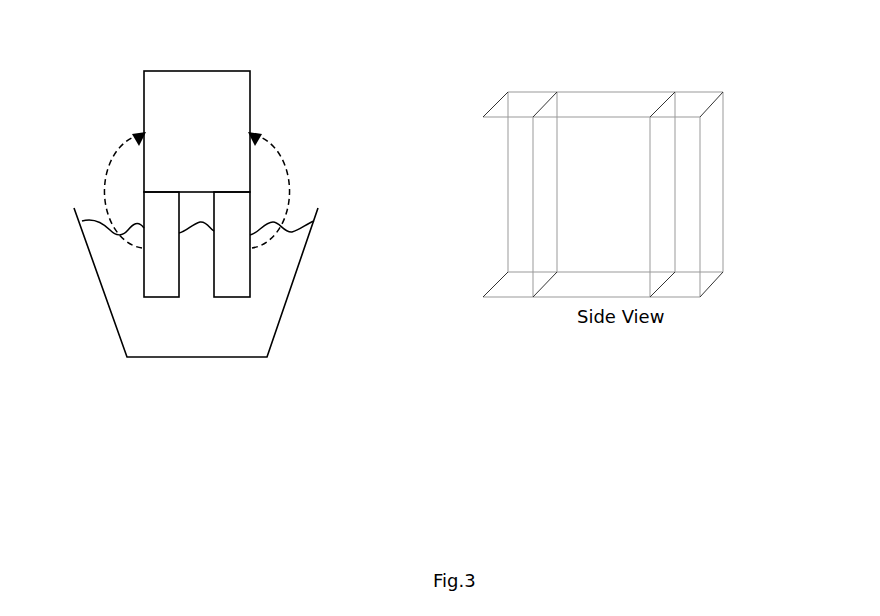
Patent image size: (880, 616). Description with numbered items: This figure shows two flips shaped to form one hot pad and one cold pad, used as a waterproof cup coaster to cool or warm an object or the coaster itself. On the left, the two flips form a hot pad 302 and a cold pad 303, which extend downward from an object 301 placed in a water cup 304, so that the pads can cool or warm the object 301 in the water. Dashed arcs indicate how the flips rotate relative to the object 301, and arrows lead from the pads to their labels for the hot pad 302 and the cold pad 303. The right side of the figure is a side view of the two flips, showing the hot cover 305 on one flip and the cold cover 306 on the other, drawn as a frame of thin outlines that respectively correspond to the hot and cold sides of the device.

The object 301 is at (197, 87).
The hot pad 302 is at (160, 297).
The cold pad 303 is at (230, 297).
The water cup 304 is at (197, 342).
The hot cover 305 is at (545, 160).
The cold cover 306 is at (718, 161).